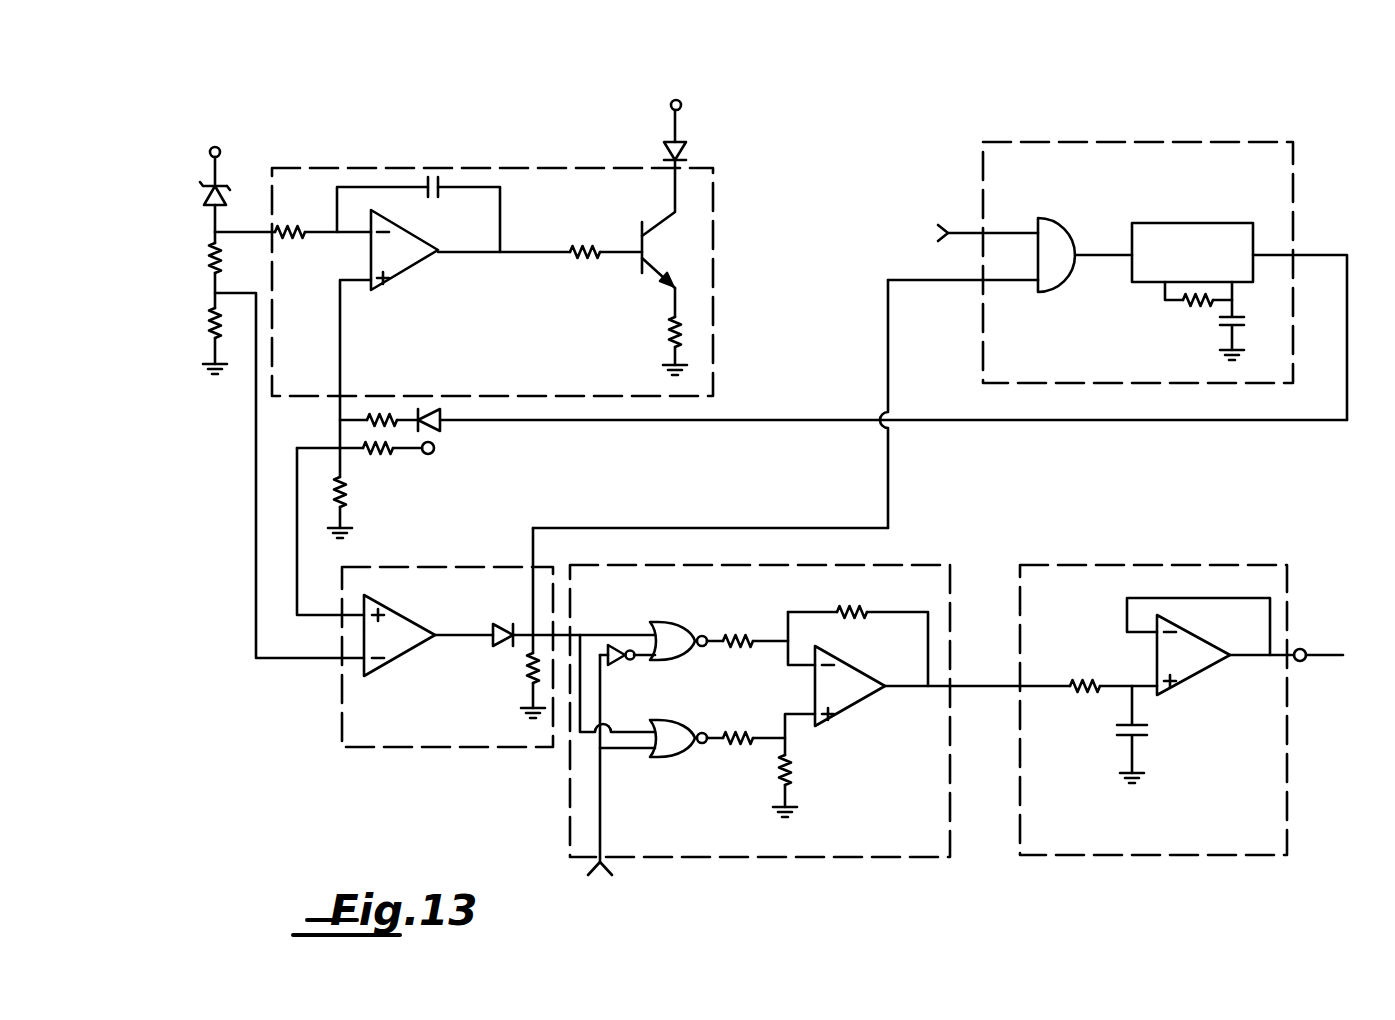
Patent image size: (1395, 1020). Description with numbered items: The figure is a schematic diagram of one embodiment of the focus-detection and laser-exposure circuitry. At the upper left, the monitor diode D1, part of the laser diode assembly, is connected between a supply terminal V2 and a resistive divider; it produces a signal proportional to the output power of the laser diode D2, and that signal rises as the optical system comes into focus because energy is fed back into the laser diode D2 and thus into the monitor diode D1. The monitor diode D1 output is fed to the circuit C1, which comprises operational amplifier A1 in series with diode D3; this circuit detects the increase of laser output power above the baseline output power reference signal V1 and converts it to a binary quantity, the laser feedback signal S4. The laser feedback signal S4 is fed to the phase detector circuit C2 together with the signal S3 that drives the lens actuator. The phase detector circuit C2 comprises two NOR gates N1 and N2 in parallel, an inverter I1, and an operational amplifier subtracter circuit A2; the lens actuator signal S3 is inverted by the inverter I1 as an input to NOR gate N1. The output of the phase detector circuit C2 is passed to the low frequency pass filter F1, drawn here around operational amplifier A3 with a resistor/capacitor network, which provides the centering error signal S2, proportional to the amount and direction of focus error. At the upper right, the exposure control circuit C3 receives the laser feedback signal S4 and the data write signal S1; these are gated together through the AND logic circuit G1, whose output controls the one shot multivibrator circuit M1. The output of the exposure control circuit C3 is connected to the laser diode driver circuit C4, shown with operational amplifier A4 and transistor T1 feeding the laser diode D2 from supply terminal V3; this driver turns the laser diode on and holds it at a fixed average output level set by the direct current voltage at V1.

The supply voltage terminal V2 is at (218, 147).
The monitor diode D1 is at (205, 197).
The laser diode driver circuit C4 is at (463, 168).
The operational amplifier A4 is at (422, 265).
The transistor T1 is at (638, 262).
The laser diode D2 is at (696, 138).
The supply voltage terminal V3 is at (681, 101).
The exposure control circuit C3 is at (1185, 142).
The data write signal S1 is at (972, 233).
The AND logic circuit G1 is at (1050, 291).
The one shot multivibrator circuit M1 is at (1193, 223).
The baseline output power reference signal V1 is at (434, 452).
The laser feedback signal S4 is at (680, 528).
The circuit C1 is at (398, 747).
The operational amplifier A1 is at (406, 650).
The diode D3 is at (507, 623).
The phase detector circuit C2 is at (900, 565).
The inverter I1 is at (615, 663).
The NOR gate N1 is at (660, 628).
The NOR gate N2 is at (665, 757).
The operational amplifier subtracter circuit A2 is at (855, 703).
The lens actuator signal S3 is at (597, 779).
The low frequency pass filter F1 is at (1115, 565).
The operational amplifier A3 is at (1197, 664).
The centering error signal S2 is at (1343, 655).